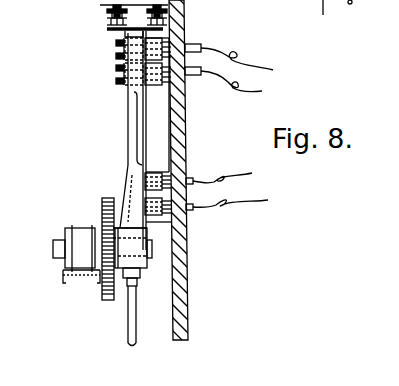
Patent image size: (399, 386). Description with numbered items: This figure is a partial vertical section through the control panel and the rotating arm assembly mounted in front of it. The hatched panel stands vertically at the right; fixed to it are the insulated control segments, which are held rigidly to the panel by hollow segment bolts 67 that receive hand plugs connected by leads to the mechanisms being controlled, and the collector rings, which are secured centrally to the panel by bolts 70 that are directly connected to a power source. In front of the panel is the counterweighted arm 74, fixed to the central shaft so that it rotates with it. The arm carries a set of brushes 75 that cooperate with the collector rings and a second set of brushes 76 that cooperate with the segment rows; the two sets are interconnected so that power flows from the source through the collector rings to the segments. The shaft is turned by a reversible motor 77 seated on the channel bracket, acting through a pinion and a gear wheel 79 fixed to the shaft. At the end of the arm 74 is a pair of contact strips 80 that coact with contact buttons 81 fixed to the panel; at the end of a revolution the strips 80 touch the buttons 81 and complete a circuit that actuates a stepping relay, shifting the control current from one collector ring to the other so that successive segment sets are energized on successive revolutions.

The segment bolts 67 is at (185, 48).
The bolts 70 is at (187, 182).
The counterweighted arm 74 is at (132, 125).
The set of brushes 75 is at (150, 216).
The second set of brushes 76 is at (153, 84).
The reversible motor 77 is at (63, 242).
The gear wheel 79 is at (110, 197).
The contact strips 80 is at (108, 30).
The contact buttons 81 is at (108, 20).